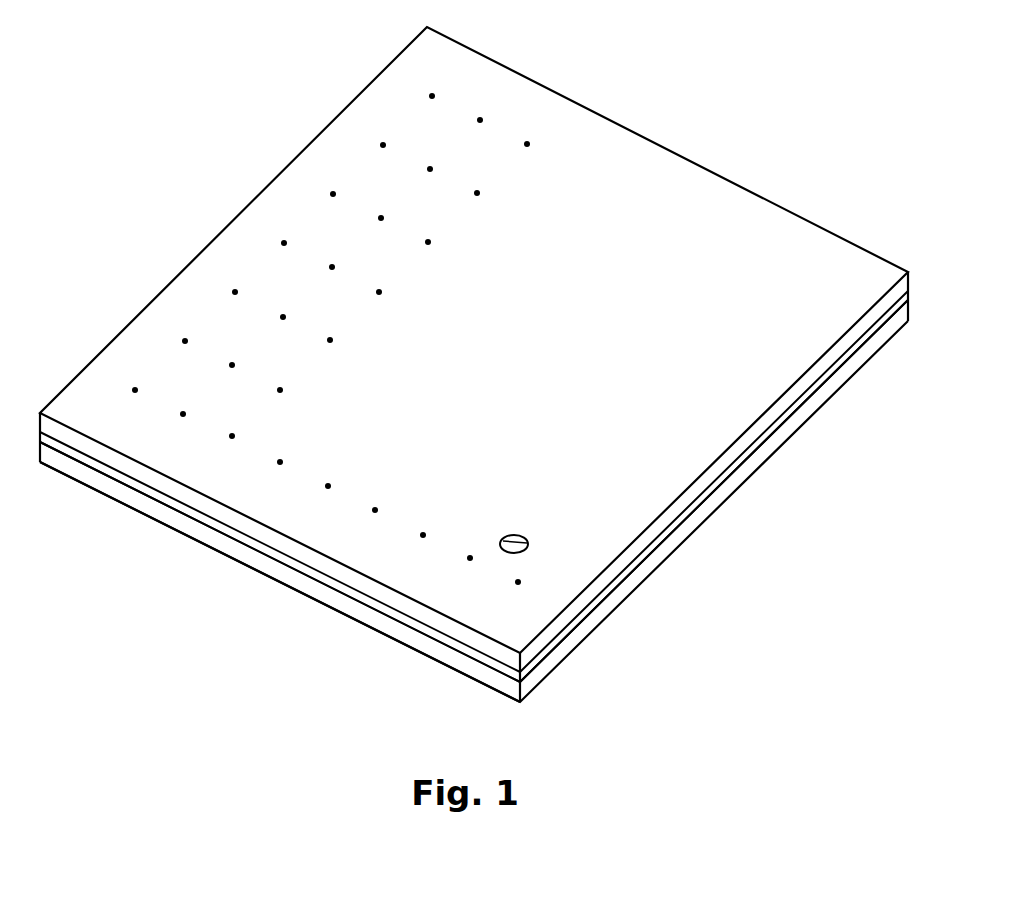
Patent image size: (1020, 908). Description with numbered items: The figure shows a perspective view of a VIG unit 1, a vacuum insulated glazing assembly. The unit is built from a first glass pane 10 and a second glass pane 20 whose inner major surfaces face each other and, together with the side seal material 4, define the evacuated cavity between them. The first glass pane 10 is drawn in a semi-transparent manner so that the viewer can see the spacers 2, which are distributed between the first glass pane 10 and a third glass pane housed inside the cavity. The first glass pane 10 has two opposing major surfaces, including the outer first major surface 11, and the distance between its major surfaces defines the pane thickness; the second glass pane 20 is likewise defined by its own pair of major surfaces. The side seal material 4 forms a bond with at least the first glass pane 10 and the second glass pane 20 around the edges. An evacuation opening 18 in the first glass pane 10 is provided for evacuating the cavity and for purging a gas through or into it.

The VIG unit 1 is at (792, 128).
The spacers 2 is at (235, 292).
The side seal material 4 is at (215, 527).
The first glass pane 10 is at (820, 253).
The first major surface 11 is at (753, 360).
The evacuation opening 18 is at (531, 536).
The second glass pane 20 is at (688, 496).